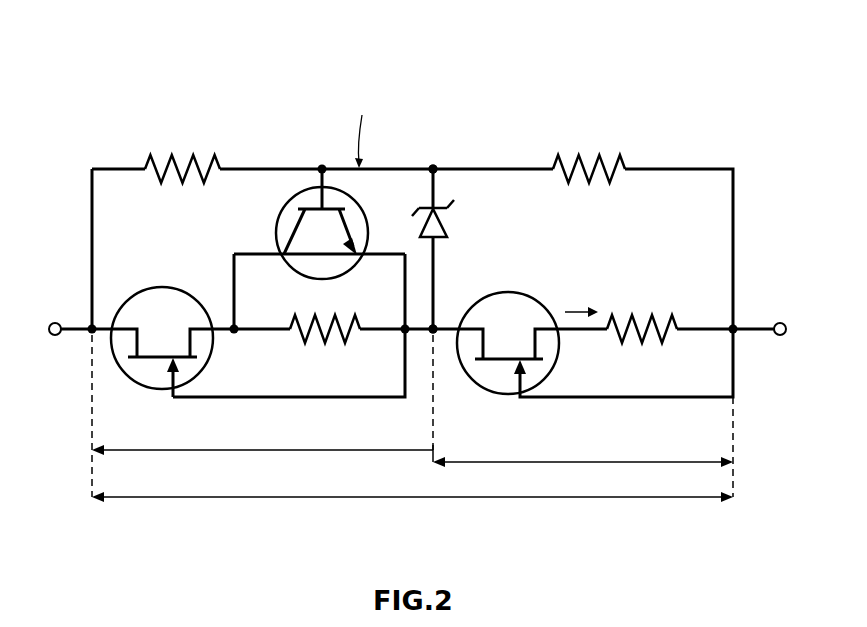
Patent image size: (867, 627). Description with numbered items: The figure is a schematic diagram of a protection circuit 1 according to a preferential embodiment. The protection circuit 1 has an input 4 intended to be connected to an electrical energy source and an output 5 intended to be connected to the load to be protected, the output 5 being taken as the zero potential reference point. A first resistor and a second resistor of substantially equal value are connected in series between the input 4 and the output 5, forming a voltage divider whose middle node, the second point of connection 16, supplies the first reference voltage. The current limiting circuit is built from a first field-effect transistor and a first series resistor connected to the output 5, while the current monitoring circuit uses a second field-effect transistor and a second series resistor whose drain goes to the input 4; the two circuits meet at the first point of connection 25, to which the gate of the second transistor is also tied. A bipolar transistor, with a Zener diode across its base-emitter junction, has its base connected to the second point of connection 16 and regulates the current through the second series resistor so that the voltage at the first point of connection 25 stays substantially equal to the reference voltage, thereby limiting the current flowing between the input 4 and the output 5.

The protection circuit 1 is at (255, 95).
The input 4 is at (54, 336).
The output 5 is at (782, 337).
The second point of connection 16 is at (434, 167).
The first point of connection 25 is at (433, 334).